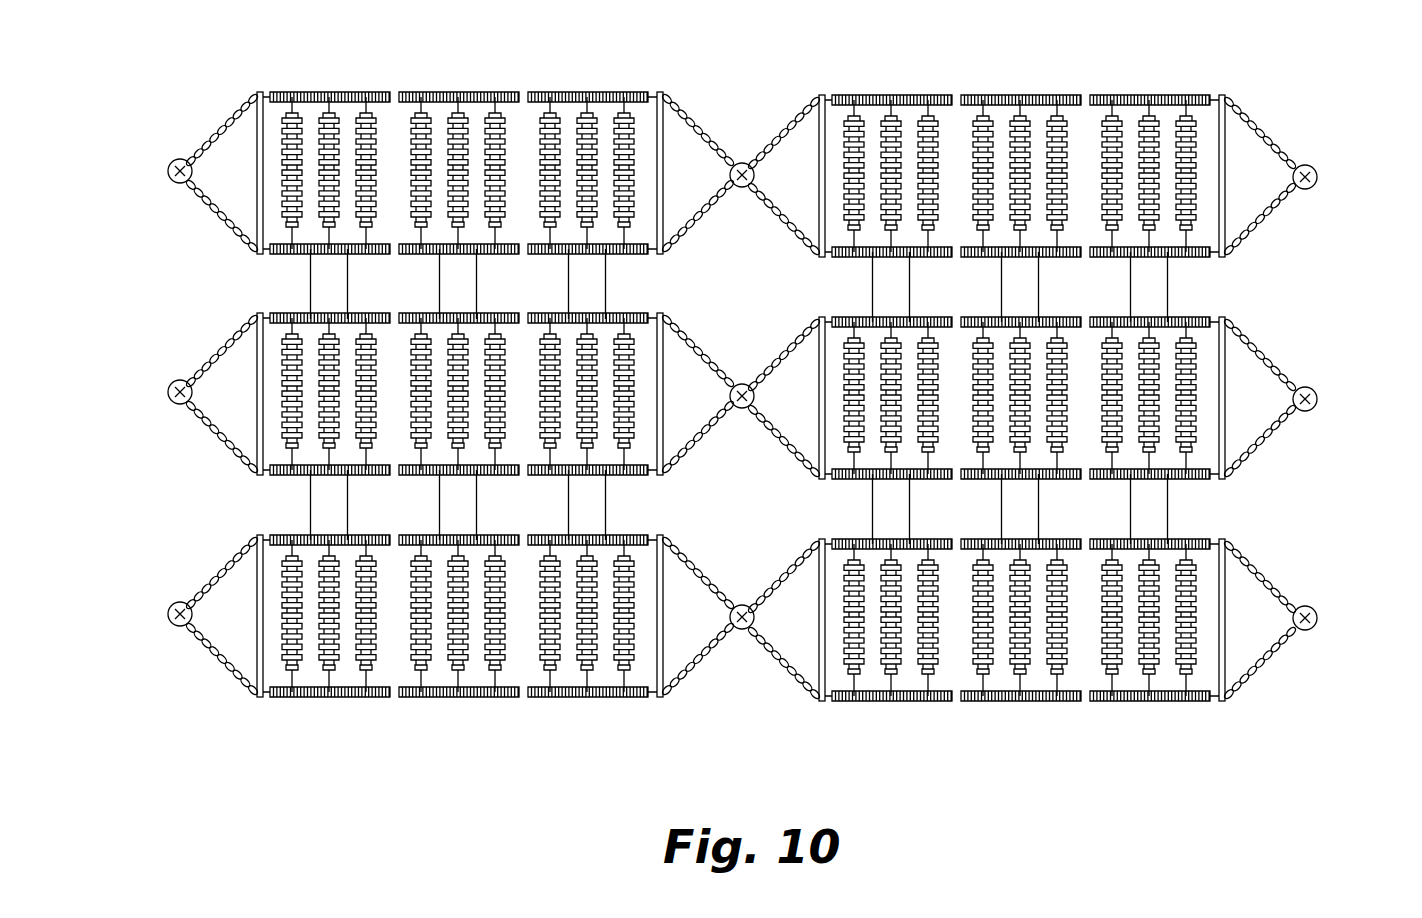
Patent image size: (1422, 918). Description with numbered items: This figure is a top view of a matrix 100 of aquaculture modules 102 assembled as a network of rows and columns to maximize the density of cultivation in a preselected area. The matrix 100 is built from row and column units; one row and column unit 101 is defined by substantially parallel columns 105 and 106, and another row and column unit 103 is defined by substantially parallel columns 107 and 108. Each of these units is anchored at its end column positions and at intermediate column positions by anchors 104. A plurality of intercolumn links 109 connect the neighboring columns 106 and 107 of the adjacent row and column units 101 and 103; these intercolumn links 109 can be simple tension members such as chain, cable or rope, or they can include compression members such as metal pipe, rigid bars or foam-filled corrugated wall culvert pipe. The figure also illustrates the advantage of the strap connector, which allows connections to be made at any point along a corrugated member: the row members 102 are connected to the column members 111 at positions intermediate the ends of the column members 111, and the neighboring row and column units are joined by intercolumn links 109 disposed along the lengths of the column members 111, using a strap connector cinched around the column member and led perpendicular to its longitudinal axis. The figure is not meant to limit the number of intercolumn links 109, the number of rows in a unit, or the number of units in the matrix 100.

The matrix 100 is at (746, 410).
The row and column unit 101 is at (1014, 155).
The aquaculture module 102 is at (823, 702).
The row and column unit 103 is at (1014, 385).
The anchor 104 is at (168, 168).
The column 105 is at (1197, 96).
The column 106 is at (1193, 258).
The column 107 is at (1195, 320).
The column 108 is at (1193, 481).
The intercolumn link 109 is at (312, 268).
The column member 111 is at (883, 701).